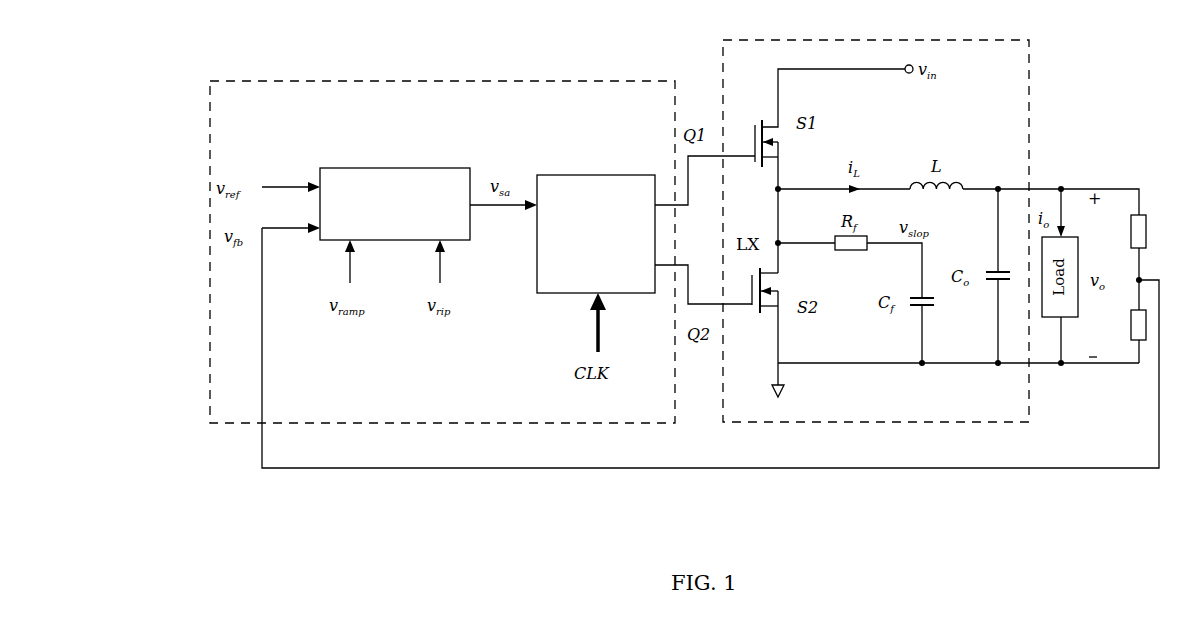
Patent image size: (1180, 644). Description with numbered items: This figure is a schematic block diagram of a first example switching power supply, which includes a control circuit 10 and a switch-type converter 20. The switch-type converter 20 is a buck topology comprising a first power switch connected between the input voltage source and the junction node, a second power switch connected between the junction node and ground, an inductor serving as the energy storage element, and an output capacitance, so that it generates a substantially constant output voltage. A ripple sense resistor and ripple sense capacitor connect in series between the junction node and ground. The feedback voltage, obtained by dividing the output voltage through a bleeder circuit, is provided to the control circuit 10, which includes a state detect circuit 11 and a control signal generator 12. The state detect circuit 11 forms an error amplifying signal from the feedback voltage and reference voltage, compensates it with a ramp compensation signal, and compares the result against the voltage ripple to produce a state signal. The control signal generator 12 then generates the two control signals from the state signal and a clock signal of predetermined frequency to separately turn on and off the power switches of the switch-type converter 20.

The control circuit 10 is at (552, 81).
The state detect circuit 11 is at (395, 204).
The control signal generator 12 is at (596, 234).
The switch-type converter 20 is at (1029, 113).